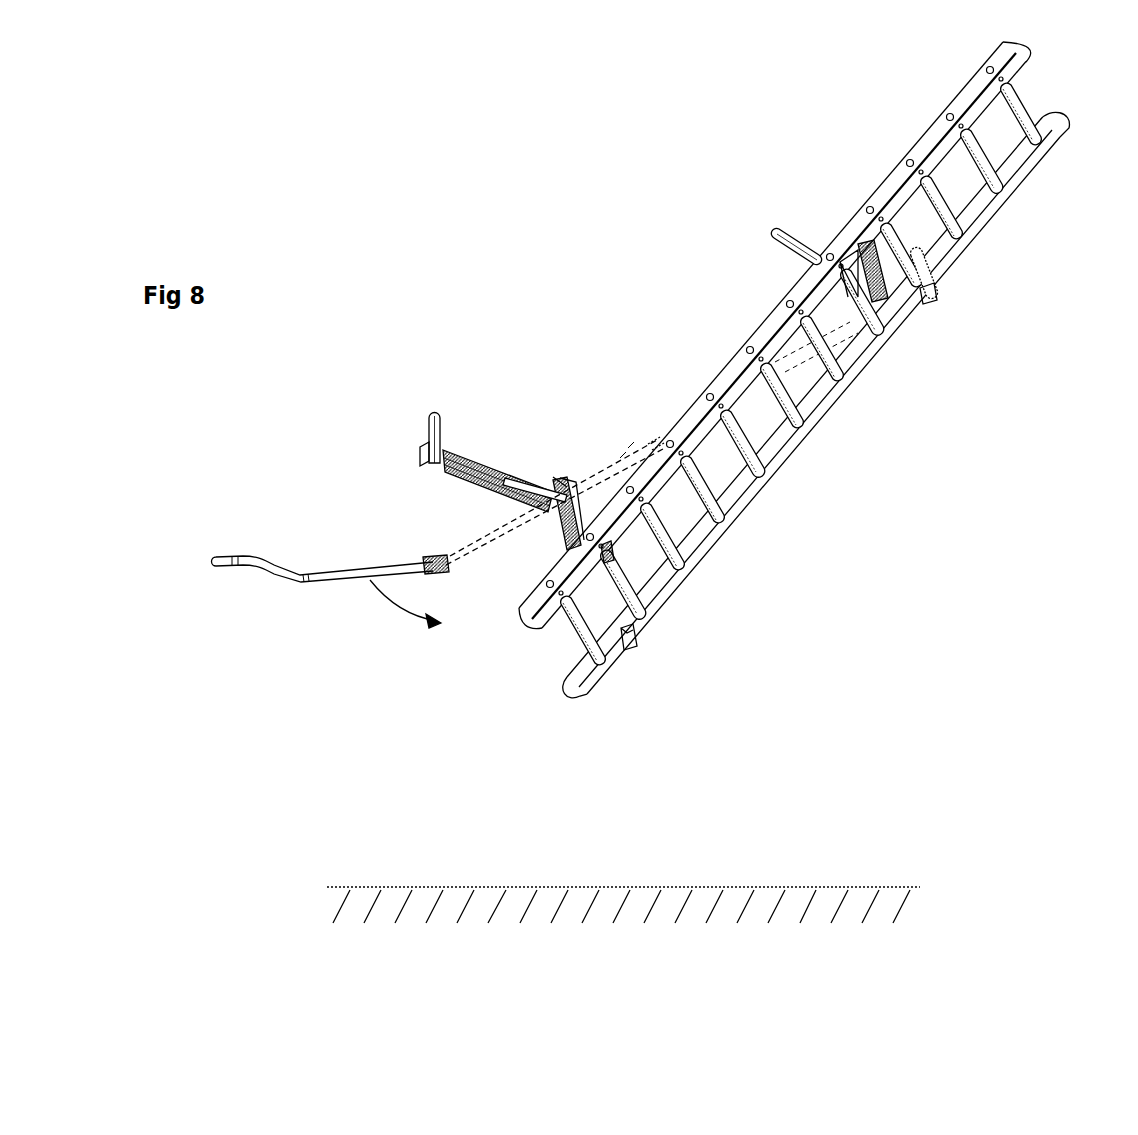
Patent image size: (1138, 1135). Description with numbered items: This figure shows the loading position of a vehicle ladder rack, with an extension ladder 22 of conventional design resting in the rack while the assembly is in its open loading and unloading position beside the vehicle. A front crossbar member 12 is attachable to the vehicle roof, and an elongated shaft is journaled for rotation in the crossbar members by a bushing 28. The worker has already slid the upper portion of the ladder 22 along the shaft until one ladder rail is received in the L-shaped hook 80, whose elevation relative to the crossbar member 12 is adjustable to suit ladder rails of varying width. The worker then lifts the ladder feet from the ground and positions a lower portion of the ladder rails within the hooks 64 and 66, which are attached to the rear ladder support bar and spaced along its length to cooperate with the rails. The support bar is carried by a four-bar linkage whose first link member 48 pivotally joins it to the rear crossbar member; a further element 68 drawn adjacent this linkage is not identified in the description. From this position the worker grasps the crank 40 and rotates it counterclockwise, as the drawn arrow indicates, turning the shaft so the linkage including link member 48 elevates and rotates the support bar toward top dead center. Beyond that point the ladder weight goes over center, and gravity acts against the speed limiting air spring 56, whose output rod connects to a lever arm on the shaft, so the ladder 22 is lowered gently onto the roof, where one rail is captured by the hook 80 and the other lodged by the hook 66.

The front crossbar member 12 is at (797, 229).
The extension ladder 22 is at (845, 388).
The bushing 28 is at (652, 440).
The crank 40 is at (347, 577).
The first link member 48 is at (525, 478).
The speed limiting air spring 56 is at (467, 487).
The hook 64 is at (637, 638).
The hook 66 is at (603, 545).
The post 68 is at (443, 423).
The L-shaped hook 80 is at (933, 276).